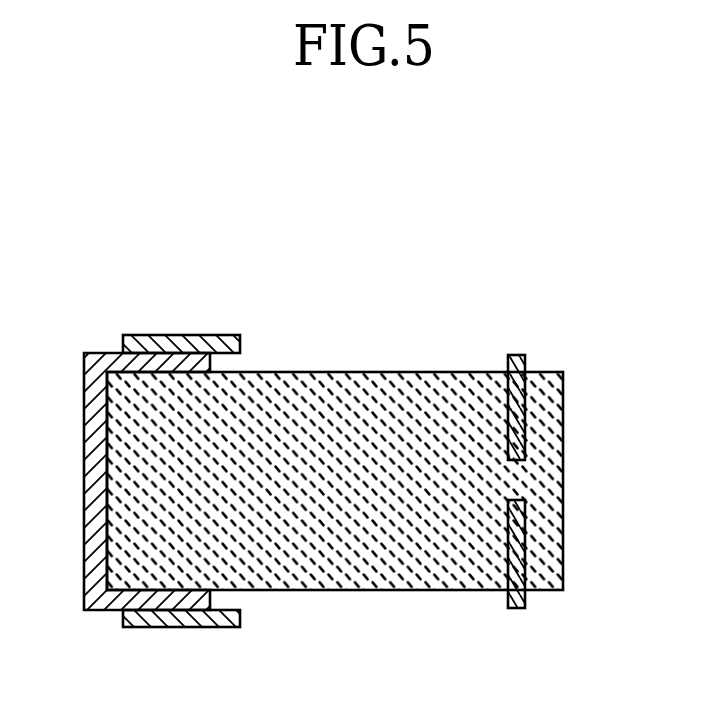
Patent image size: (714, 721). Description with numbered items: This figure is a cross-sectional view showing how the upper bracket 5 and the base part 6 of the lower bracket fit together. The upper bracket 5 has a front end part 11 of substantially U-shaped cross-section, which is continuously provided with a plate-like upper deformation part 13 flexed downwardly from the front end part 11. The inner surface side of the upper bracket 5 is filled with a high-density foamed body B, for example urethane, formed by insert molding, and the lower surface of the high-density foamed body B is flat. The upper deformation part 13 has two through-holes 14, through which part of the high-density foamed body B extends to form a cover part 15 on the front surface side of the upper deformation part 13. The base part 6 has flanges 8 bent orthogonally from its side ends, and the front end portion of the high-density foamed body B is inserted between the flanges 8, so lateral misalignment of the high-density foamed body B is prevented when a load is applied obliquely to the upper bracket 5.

The upper bracket 5 is at (324, 313).
The base part 6 is at (84, 478).
The flanges 8 is at (177, 590).
The front end part 11 is at (222, 333).
The upper deformation part 13 is at (515, 352).
The through-holes 14 is at (519, 466).
The cover part 15 is at (563, 539).
The high-density foamed body B is at (380, 592).